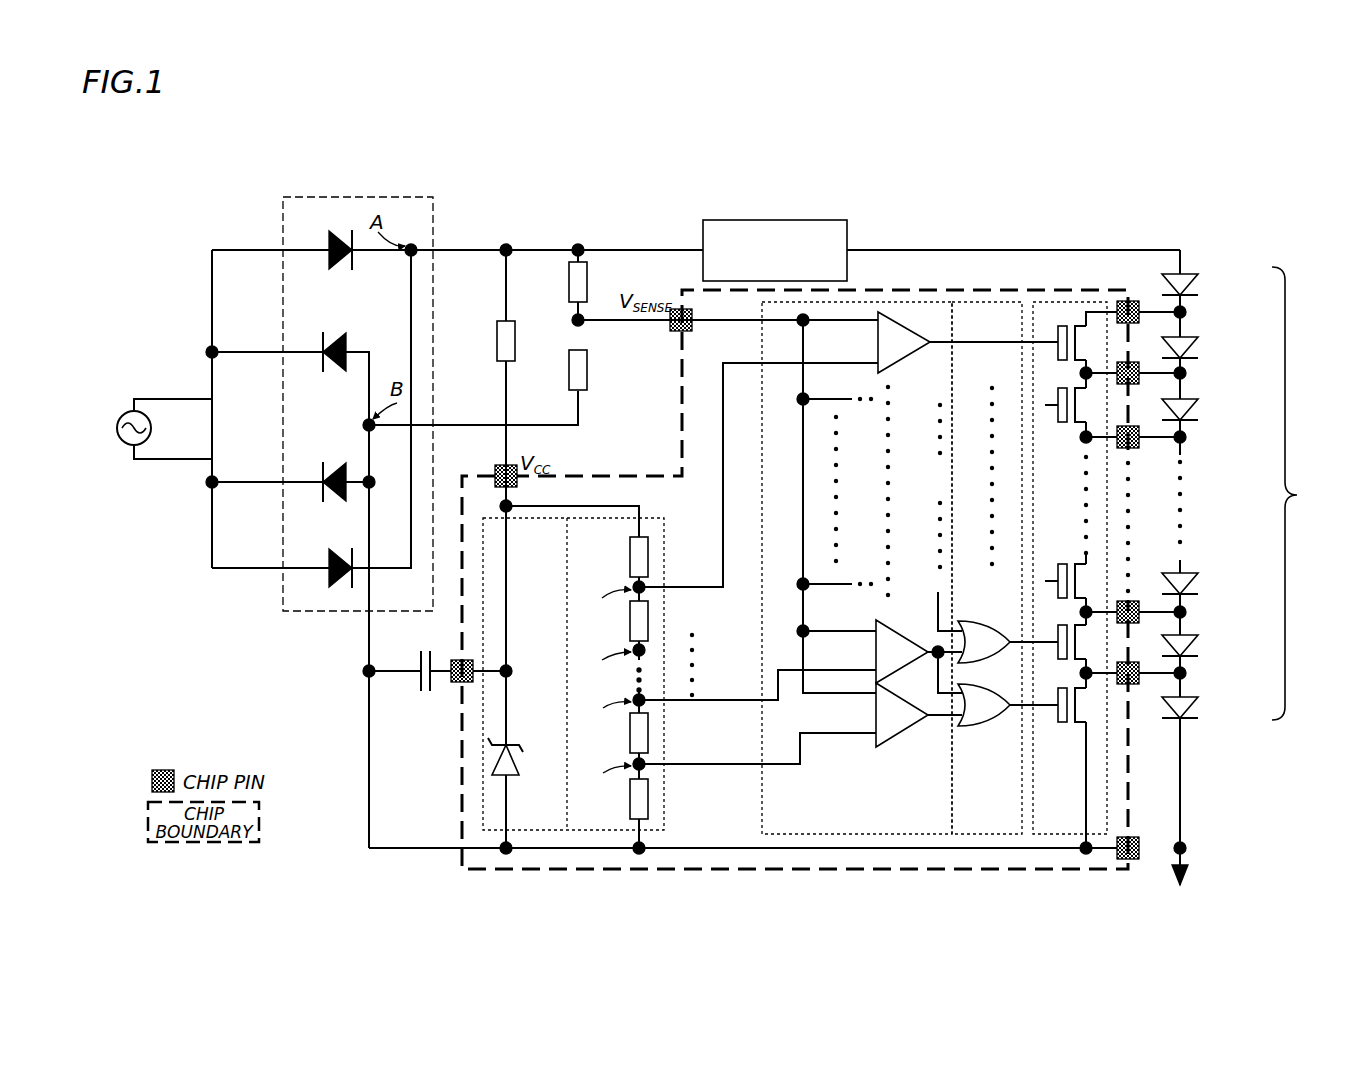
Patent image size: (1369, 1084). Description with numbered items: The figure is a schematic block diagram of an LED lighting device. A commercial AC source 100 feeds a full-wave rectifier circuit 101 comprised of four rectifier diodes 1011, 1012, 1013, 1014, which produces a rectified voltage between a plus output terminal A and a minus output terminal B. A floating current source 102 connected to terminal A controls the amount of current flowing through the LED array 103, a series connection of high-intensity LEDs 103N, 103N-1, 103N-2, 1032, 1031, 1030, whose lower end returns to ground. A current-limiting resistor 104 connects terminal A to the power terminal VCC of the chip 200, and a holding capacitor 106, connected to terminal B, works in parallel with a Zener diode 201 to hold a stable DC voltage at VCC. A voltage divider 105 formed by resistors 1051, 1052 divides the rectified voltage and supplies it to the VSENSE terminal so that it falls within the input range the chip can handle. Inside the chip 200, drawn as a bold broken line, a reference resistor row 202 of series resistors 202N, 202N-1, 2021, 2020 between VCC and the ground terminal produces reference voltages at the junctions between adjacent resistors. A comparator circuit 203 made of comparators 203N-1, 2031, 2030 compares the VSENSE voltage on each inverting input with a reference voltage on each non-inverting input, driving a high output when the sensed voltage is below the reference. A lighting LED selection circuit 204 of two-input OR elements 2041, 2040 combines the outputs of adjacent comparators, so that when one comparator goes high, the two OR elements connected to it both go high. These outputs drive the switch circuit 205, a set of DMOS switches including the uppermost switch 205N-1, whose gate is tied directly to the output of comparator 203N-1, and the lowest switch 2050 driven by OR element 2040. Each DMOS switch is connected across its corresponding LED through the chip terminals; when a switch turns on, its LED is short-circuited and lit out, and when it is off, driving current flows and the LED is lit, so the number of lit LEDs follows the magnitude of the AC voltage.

The AC source 100 is at (128, 467).
The full-wave rectifier circuit 101 is at (330, 429).
The rectifier diode 1011 is at (327, 236).
The rectifier diode 1012 is at (343, 330).
The rectifier diode 1013 is at (340, 463).
The rectifier diode 1014 is at (327, 550).
The floating current source 102 is at (703, 217).
The LED array 103 is at (1251, 494).
The LED 103N is at (1198, 282).
The LED 103N-1 is at (1198, 345).
The LED 103N-2 is at (1198, 407).
The LED 1032 is at (1198, 581).
The LED 1031 is at (1198, 643).
The LED 1030 is at (1198, 705).
The current-limiting resistor 104 is at (494, 350).
The voltage divider 105 is at (573, 326).
The voltage divider resistor 1051 is at (568, 284).
The voltage divider resistor 1052 is at (603, 347).
The holding capacitor 106 is at (418, 688).
The chip (control circuit) 200 is at (462, 870).
The Zener diode 201 is at (542, 753).
The reference resistor row 202 is at (680, 637).
The reference resistor 202N is at (650, 553).
The reference resistor 202N-1 is at (650, 617).
The reference resistor 2021 is at (650, 730).
The reference resistor 2020 is at (650, 797).
The comparator circuit 203 is at (858, 608).
The comparator 203N-1 is at (897, 370).
The comparator 2031 is at (912, 634).
The comparator 2030 is at (900, 738).
The lighting LED selection circuit 204 is at (987, 608).
The OR element 2041 is at (980, 620).
The OR element 2040 is at (975, 728).
The switch circuit 205 is at (1069, 587).
The DMOS switch 205N-1 is at (1074, 322).
The DMOS switch 2050 is at (1074, 722).